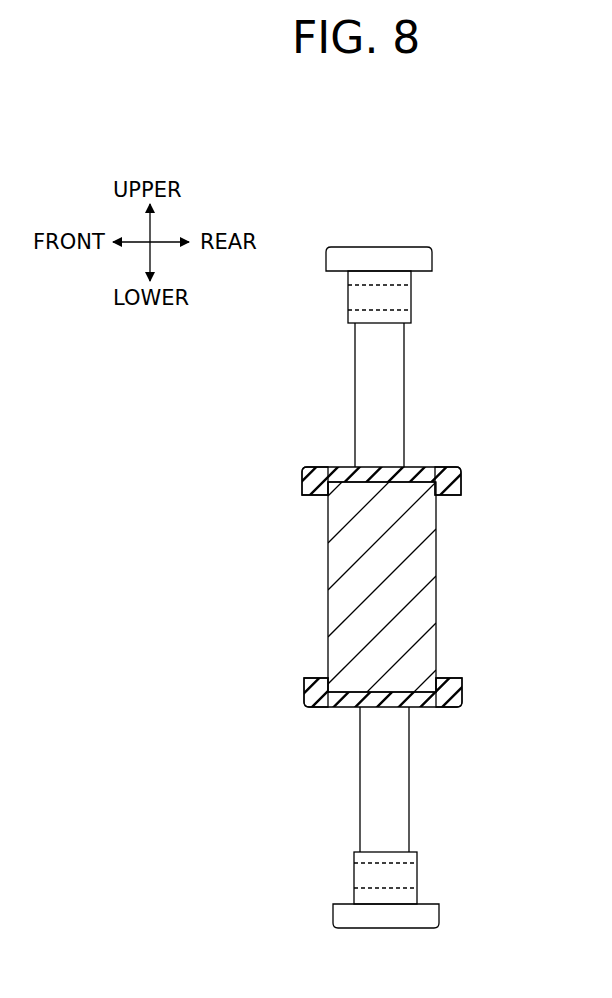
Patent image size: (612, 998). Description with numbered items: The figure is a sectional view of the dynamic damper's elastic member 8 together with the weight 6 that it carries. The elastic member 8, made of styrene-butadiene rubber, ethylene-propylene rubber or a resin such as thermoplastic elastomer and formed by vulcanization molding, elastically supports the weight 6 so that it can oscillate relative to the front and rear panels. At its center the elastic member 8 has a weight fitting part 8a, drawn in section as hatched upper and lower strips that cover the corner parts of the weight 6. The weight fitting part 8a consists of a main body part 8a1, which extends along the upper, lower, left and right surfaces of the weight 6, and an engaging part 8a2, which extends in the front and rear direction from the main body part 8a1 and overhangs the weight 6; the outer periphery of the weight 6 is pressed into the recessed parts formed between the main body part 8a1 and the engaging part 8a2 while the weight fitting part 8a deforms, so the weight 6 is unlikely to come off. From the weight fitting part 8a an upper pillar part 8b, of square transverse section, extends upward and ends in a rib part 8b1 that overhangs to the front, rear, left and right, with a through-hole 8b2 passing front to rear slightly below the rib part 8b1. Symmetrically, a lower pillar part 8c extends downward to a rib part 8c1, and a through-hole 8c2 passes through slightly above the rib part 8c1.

The elastic member 8 is at (422, 229).
The rib part 8b1 is at (432, 260).
The through-hole 8b2 is at (390, 286).
The upper pillar part 8b is at (405, 390).
The weight fitting part 8a is at (418, 466).
The main body part 8a1 is at (338, 466).
The engaging part 8a2 is at (461, 477).
The weight 6 is at (436, 568).
The lower pillar part 8c is at (409, 783).
The through-hole 8c2 is at (400, 888).
The rib part 8c1 is at (439, 912).